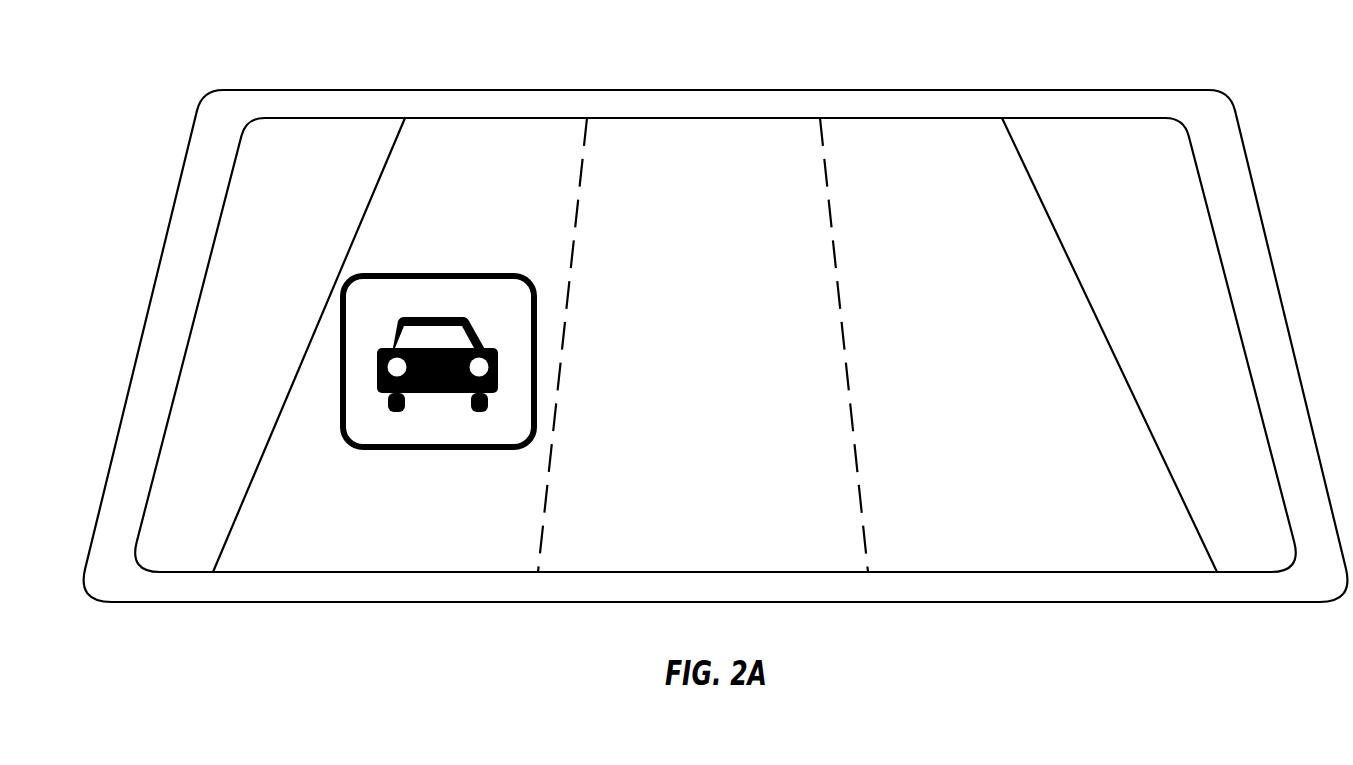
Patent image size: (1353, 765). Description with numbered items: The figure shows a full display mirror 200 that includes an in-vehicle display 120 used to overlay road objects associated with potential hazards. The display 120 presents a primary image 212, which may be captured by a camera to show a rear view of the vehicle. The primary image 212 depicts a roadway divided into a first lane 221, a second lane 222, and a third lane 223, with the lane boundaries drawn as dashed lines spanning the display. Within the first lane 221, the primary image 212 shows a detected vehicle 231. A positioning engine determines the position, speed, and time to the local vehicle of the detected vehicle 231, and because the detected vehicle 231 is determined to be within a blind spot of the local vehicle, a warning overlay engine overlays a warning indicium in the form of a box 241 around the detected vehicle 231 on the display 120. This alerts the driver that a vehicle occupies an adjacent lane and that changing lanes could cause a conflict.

The full display mirror 200 is at (293, 90).
The in-vehicle display 120 is at (420, 118).
The primary image 212 is at (280, 170).
The first lane 221 is at (462, 188).
The second lane 222 is at (658, 190).
The third lane 223 is at (898, 190).
The detected vehicle 231 is at (450, 317).
The box 241 is at (517, 278).